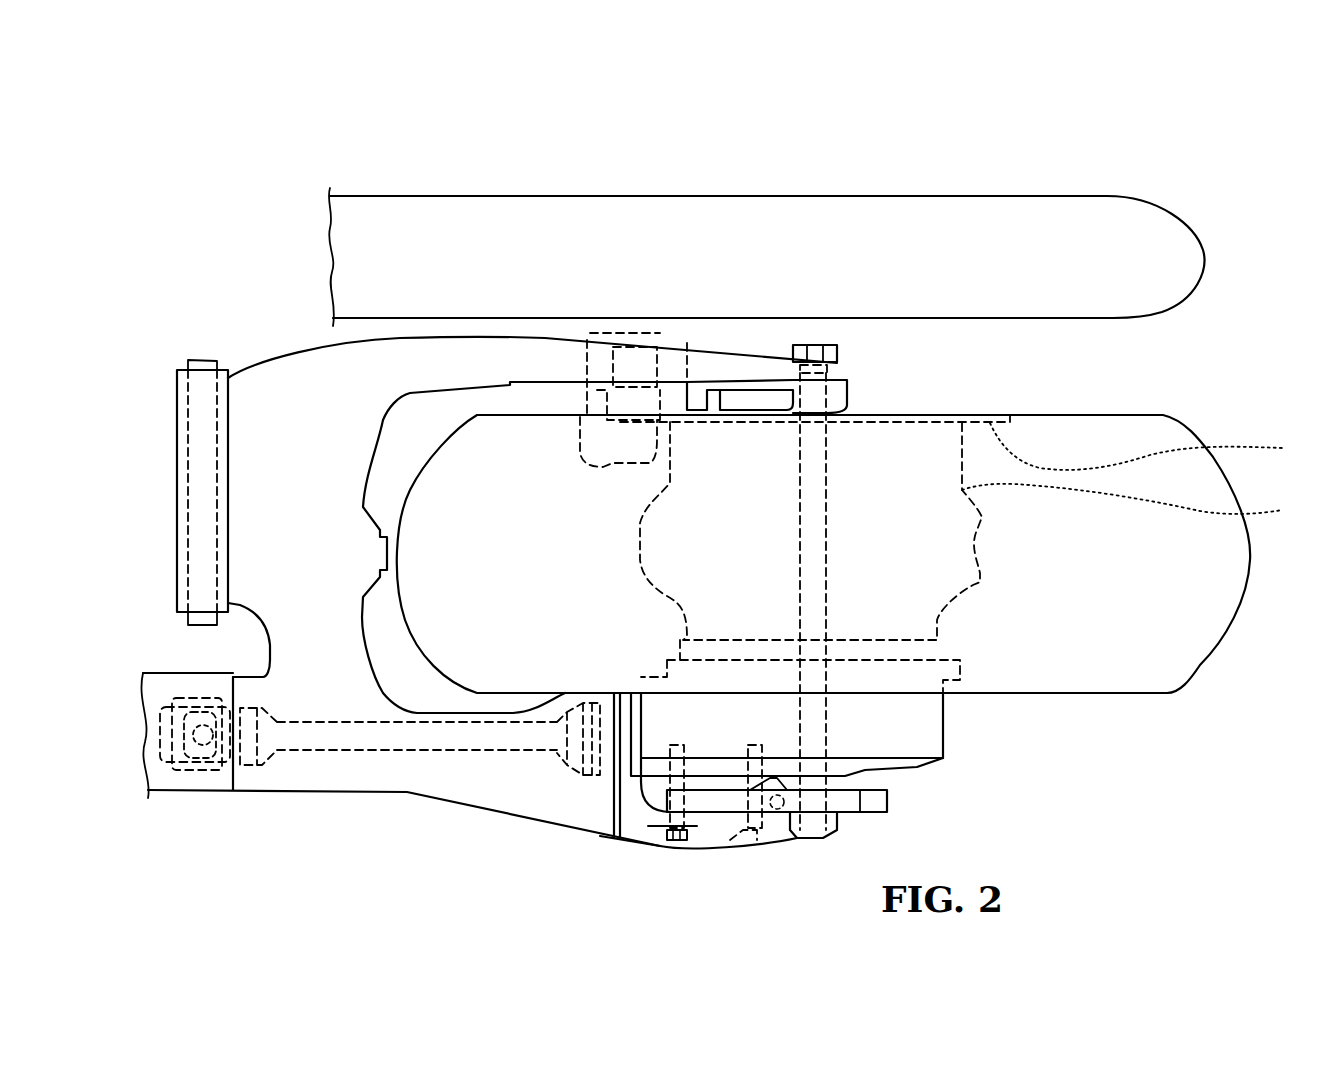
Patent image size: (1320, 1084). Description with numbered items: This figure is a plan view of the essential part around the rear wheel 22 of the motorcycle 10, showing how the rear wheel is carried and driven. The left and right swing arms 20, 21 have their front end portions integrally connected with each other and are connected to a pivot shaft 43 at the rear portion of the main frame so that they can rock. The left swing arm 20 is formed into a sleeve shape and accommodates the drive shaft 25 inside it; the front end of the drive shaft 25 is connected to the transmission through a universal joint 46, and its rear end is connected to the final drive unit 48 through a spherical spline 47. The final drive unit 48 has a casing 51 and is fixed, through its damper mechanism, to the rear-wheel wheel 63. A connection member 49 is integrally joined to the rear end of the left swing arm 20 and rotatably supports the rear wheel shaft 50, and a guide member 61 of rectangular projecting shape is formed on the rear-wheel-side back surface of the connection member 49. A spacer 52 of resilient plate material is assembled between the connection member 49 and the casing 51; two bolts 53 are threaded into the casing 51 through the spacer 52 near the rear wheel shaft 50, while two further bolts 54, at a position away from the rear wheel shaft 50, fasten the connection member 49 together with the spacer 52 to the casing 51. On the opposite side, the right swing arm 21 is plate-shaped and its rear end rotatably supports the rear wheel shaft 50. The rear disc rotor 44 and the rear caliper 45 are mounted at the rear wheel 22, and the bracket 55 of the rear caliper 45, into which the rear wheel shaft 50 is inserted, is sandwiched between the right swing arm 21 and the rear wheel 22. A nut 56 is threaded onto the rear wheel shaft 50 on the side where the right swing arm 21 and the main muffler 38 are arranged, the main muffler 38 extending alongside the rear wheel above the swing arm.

The vehicle lighting assembly 10 is at (282, 168).
The left swing arm 20 is at (357, 793).
The right swing arm 21 is at (292, 358).
The rear wheel 22 is at (1190, 437).
The drive shaft 25 is at (420, 753).
The main muffler 38 is at (1003, 196).
The pivot shaft 43 is at (177, 364).
The rear disc rotor 44 is at (977, 531).
The rear caliper 45 is at (587, 343).
The universal joint 46 is at (203, 775).
The spherical spline 47 is at (600, 775).
The final drive unit 48 is at (943, 727).
The connection member 49 is at (643, 848).
The rear wheel shaft 50 is at (813, 840).
The casing 51 is at (917, 767).
The spacer 52 is at (890, 803).
The bolts 53 is at (730, 840).
The bolts 54 is at (675, 842).
The bracket 55 is at (760, 398).
The nut 56 is at (837, 358).
The guide member 61 is at (780, 837).
The rear-wheel wheel 63 is at (1138, 504).